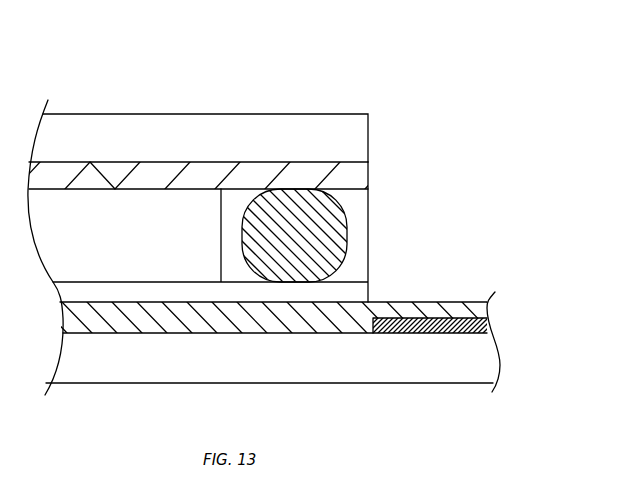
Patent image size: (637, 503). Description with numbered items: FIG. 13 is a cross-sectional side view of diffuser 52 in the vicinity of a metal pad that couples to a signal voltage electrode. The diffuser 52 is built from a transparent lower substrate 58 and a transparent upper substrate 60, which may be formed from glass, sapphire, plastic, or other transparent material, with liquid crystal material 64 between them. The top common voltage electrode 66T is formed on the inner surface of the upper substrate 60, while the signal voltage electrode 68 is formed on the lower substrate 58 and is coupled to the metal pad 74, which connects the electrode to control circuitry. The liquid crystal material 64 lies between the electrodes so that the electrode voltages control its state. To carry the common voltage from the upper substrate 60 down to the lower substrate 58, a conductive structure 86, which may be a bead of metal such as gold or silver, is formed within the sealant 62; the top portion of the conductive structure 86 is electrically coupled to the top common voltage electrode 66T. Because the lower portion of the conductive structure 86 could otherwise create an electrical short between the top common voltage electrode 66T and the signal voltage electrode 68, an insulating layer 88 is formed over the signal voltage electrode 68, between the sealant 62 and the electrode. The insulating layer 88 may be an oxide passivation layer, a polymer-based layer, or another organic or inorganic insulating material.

The diffuser 52 is at (397, 56).
The lower substrate 58 is at (420, 367).
The upper substrate 60 is at (358, 139).
The sealant 62 is at (358, 227).
The liquid crystal material 64 is at (103, 203).
The top common voltage electrode 66T is at (162, 172).
The signal voltage electrode 68 is at (430, 300).
The metal pad 74 is at (485, 323).
The conductive structure 86 is at (300, 207).
The insulating layer 88 is at (137, 292).